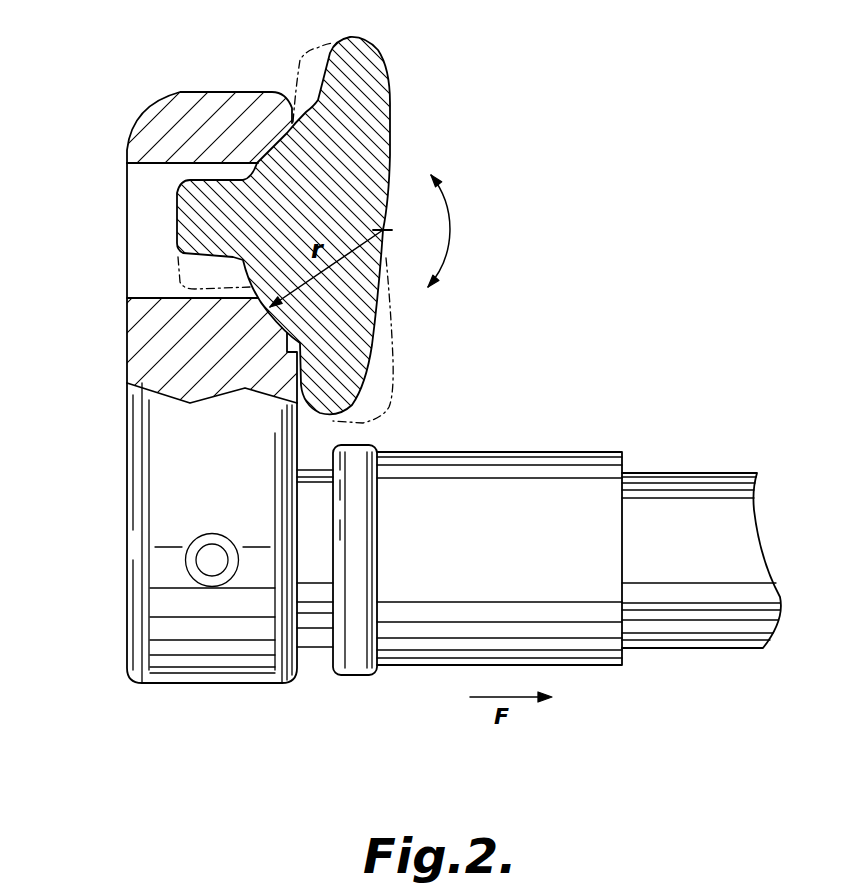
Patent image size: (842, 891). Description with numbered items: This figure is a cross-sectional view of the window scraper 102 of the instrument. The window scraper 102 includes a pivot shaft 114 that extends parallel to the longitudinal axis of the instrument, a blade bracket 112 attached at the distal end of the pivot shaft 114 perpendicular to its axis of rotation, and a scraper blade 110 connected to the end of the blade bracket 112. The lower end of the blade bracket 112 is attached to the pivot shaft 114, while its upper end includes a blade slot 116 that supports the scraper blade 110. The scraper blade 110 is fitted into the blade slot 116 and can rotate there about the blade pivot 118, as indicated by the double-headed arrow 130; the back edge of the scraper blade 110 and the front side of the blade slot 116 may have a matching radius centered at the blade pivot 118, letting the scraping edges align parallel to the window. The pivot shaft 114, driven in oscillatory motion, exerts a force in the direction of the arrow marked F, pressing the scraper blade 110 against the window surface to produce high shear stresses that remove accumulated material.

The window scraper 102 is at (105, 632).
The scraper blade 110 is at (380, 57).
The blade bracket 112 is at (183, 92).
The pivot shaft 114 is at (677, 475).
The blade slot 116 is at (140, 203).
The blade pivot 118 is at (383, 230).
The double-headed arrow 130 is at (448, 230).